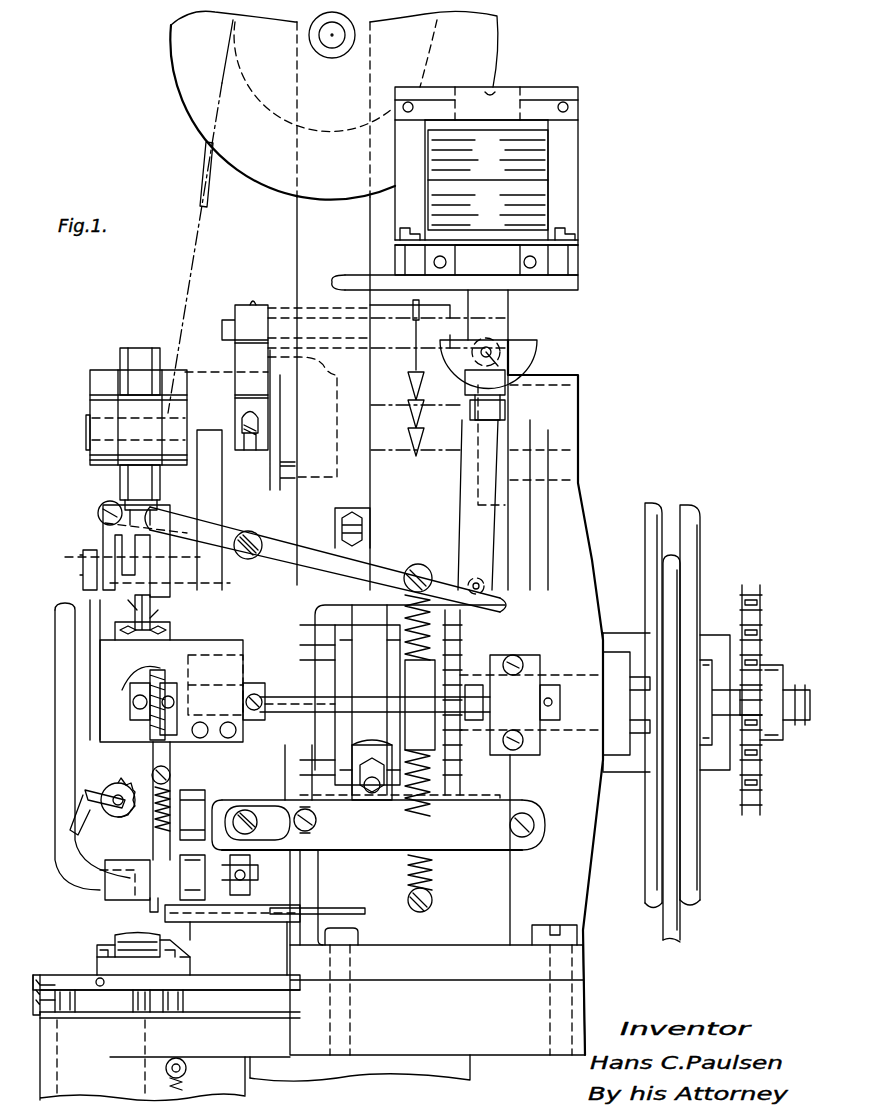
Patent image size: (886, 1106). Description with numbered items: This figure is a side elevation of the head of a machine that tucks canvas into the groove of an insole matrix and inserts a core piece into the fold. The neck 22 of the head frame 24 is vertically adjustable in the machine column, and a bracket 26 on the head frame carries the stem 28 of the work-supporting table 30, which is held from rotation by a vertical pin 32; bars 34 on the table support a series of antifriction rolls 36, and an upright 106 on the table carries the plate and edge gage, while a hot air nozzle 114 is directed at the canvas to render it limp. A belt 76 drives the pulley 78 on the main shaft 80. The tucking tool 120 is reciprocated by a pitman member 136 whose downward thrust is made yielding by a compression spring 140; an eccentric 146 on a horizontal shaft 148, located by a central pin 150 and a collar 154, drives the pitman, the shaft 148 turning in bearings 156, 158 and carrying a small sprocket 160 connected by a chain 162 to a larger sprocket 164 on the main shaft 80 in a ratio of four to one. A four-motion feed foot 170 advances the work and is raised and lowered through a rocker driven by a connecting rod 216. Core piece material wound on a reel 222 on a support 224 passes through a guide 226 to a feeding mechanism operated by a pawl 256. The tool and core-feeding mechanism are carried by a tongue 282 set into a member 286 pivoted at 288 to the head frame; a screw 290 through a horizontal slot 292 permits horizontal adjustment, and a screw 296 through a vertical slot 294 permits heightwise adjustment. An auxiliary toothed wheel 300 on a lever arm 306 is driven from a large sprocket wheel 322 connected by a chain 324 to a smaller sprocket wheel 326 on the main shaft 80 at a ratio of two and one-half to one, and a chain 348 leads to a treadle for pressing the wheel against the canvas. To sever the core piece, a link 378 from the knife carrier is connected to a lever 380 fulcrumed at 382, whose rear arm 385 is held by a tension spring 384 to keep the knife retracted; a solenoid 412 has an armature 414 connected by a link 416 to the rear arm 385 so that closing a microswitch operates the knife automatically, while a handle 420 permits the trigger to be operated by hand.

The neck 22 is at (395, 1072).
The head frame 24 is at (520, 975).
The bracket 26 is at (450, 1055).
The stem 28 is at (95, 1015).
The work-supporting table 30 is at (77, 975).
The vertical pin 32 is at (180, 1003).
The bars 34 is at (175, 965).
The antifriction rolls 36 is at (125, 945).
The belt 76 is at (672, 922).
The pulley 78 is at (690, 870).
The main shaft 80 is at (735, 765).
The upright 106 is at (270, 940).
The hot air nozzle 114 is at (92, 872).
The tucking tool 120 is at (150, 905).
The pitman member 136 is at (172, 760).
The compression spring 140 is at (168, 805).
The eccentric 146 is at (172, 722).
The horizontal shaft 148 is at (295, 688).
The central pin 150 is at (133, 695).
The collar 154 is at (148, 720).
The bearing 156 is at (225, 705).
The bearing 158 is at (518, 700).
The small sprocket 160 is at (438, 720).
The chain 162 is at (465, 648).
The larger sprocket 164 is at (500, 612).
The four-motion feed foot 170 is at (100, 898).
The connecting rod 216 is at (367, 605).
The reel 222 is at (203, 108).
The support 224 is at (306, 243).
The guide 226 is at (155, 640).
The pawl 256 is at (90, 855).
The tongue 282 is at (270, 800).
The member 286 is at (465, 840).
The pivot 288 is at (535, 825).
The screw 290 is at (275, 790).
The horizontal slot 292 is at (215, 810).
The vertical slot 294 is at (306, 810).
The screw 296 is at (316, 828).
The toothed wheel 300 is at (205, 878).
The lever arm 306 is at (255, 878).
The large sprocket wheel 322 is at (752, 585).
The chain 324 is at (762, 597).
The smaller sprocket wheel 326 is at (760, 665).
The chain 348 is at (420, 456).
The link 378 is at (105, 538).
The lever 380 is at (230, 530).
The fulcrum 382 is at (262, 545).
The tension spring 384 is at (432, 878).
The rear arm 385 is at (380, 560).
The solenoid 412 is at (530, 215).
The armature 414 is at (505, 320).
The link 416 is at (482, 520).
The handle 420 is at (342, 900).